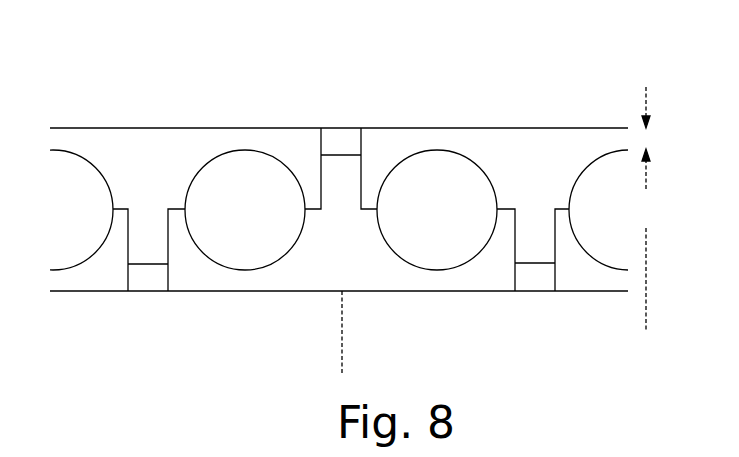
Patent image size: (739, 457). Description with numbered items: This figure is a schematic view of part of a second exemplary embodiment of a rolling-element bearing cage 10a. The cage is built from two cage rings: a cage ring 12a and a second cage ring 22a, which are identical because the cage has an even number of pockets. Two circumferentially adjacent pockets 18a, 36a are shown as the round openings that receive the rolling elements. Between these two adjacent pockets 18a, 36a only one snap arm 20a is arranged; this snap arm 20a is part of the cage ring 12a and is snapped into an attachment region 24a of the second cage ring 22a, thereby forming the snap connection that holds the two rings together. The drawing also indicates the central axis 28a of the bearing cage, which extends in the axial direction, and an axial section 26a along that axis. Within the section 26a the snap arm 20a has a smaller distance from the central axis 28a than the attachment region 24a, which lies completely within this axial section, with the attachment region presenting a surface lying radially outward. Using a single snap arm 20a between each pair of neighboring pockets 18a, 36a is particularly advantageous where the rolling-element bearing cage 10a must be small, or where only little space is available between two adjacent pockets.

The rolling-element bearing cage 10a is at (118, 92).
The cage ring 12a is at (362, 272).
The pocket 18a is at (263, 225).
The pocket 36a is at (455, 225).
The second cage ring 22a is at (163, 178).
The attachment region 24a is at (338, 140).
The snap arm 20a is at (347, 177).
The section 26a is at (667, 208).
The central axis 28a is at (366, 333).